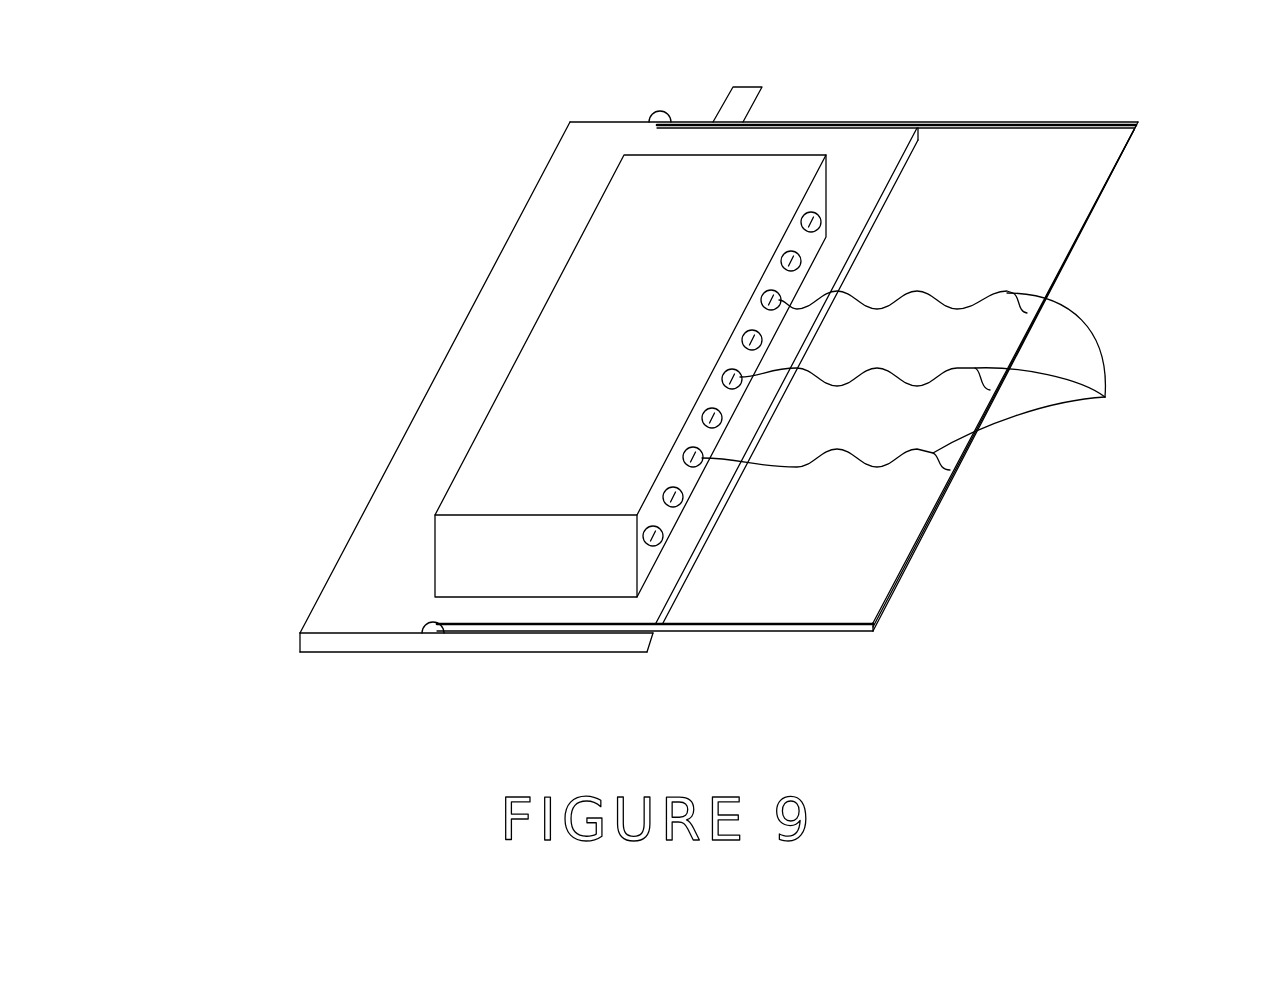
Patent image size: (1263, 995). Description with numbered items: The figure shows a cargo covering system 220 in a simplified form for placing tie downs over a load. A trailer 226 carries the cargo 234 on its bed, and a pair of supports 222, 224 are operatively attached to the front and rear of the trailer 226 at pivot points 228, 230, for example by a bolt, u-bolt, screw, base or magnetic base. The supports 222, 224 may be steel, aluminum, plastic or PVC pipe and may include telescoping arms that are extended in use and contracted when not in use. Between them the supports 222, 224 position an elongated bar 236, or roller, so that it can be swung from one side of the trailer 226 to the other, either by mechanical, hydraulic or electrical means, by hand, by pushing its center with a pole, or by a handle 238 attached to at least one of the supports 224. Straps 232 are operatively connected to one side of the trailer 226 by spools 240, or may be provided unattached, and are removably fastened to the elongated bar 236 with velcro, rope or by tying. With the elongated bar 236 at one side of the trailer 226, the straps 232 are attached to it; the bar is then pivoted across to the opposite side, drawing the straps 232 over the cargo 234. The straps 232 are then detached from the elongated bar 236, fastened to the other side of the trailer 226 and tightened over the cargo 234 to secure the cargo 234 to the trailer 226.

The cargo covering system 220 is at (341, 172).
The support 222 is at (825, 630).
The support 224 is at (958, 122).
The trailer 226 is at (319, 645).
The pivot point 228 is at (433, 634).
The pivot point 230 is at (660, 110).
The straps 232 is at (941, 380).
The cargo 234 is at (602, 353).
The elongated bar 236 is at (1094, 206).
The handle 238 is at (747, 88).
The spools 240 is at (801, 258).